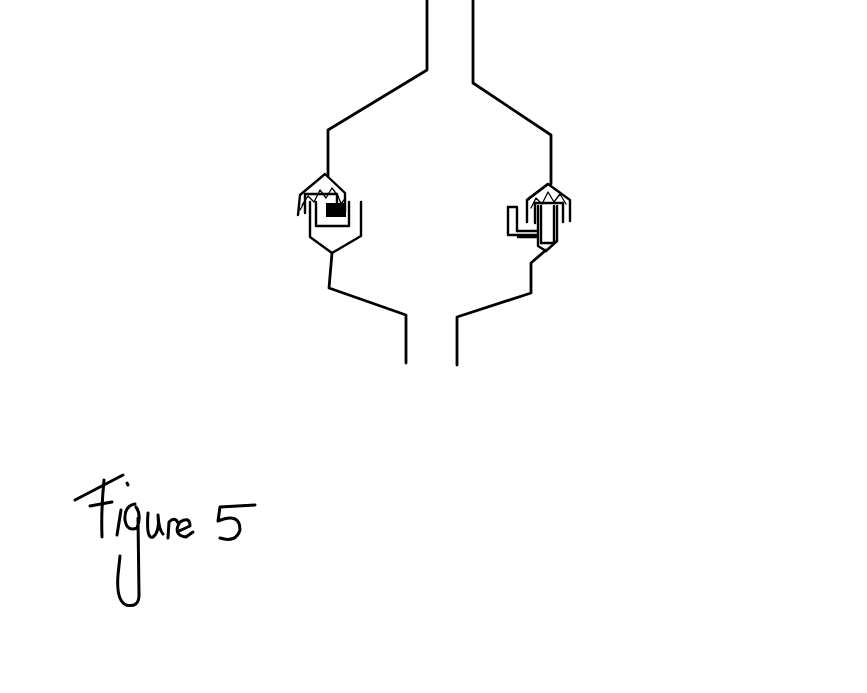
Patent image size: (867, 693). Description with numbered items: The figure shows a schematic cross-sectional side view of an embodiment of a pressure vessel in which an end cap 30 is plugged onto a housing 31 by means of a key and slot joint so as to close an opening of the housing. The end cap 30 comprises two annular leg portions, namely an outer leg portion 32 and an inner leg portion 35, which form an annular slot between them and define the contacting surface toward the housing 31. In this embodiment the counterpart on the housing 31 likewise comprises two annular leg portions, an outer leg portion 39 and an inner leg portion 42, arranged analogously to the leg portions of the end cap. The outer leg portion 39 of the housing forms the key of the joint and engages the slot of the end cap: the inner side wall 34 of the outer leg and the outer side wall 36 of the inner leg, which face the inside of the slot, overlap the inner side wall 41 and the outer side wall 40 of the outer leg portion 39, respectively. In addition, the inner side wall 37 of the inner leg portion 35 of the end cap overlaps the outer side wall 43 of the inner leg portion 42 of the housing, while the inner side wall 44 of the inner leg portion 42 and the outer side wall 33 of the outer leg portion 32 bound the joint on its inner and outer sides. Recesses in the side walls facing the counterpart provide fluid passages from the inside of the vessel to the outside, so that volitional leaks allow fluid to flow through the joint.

The end cap 30 is at (528, 78).
The housing 31 is at (517, 347).
The outer leg portion of the end cap 32 is at (575, 205).
The outer side wall of the outer leg portion 33 is at (573, 212).
The inner side wall of the outer leg 34 is at (558, 227).
The inner leg portion of the end cap 35 is at (525, 197).
The outer side wall of the inner leg 36 is at (537, 197).
The inner side wall of the inner leg portion 37 is at (517, 197).
The outer leg portion of the housing 39 is at (560, 238).
The outer side wall of the outer leg portion of the housing 40 is at (560, 230).
The inner side wall of the outer leg portion of the housing 41 is at (547, 242).
The inner leg portion of the housing 42 is at (498, 238).
The outer side wall of the inner leg portion of the housing 43 is at (517, 232).
The inner side wall of the inner leg portion of the housing 44 is at (503, 217).